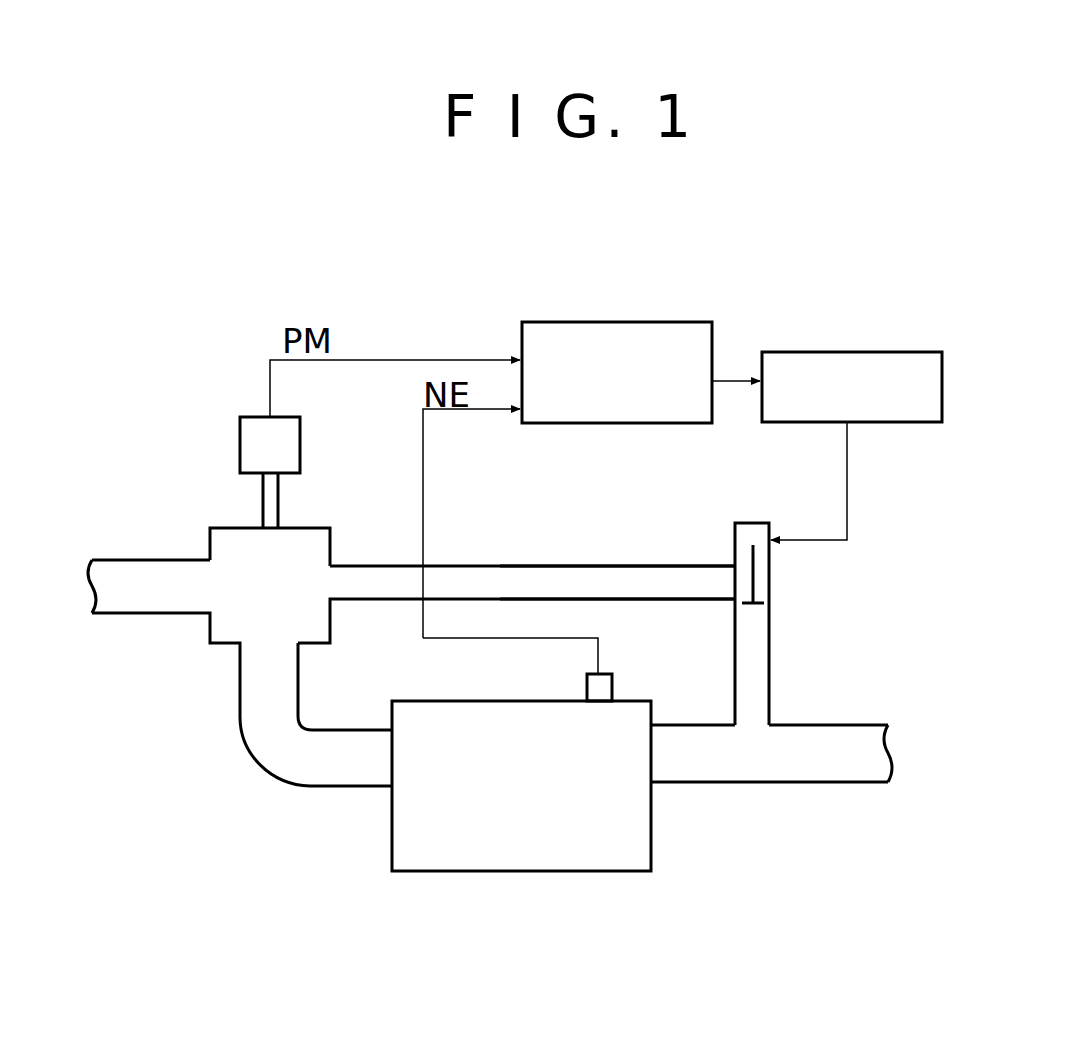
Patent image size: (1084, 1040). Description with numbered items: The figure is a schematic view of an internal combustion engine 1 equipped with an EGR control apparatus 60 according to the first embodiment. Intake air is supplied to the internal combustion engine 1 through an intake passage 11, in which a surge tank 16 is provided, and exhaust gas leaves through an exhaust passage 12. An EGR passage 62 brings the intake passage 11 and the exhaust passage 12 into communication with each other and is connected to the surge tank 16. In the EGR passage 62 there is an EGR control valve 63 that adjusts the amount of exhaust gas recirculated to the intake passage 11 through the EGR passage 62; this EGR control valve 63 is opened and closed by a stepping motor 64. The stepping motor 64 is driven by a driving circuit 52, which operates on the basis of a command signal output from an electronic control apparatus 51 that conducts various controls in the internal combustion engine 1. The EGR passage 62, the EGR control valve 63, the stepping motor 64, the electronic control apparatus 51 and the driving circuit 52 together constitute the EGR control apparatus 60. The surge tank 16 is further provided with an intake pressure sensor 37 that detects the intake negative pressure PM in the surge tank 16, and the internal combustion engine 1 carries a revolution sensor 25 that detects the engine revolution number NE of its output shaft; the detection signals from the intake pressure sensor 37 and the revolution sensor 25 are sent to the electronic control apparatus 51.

The internal combustion engine 1 is at (618, 871).
The intake passage 11 is at (158, 605).
The exhaust passage 12 is at (792, 782).
The surge tank 16 is at (225, 533).
The revolution sensor 25 is at (613, 683).
The intake pressure sensor 37 is at (243, 443).
The electronic control apparatus 51 is at (585, 425).
The driving circuit 52 is at (907, 422).
The EGR control apparatus 60 is at (850, 557).
The EGR passage 62 is at (658, 577).
The EGR control valve 63 is at (770, 583).
The stepping motor 64 is at (755, 522).